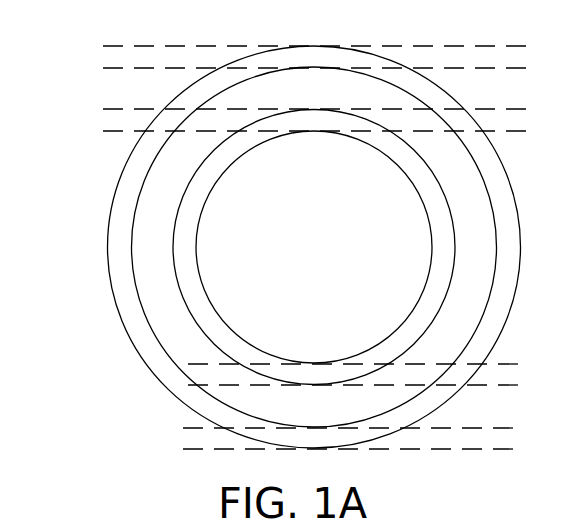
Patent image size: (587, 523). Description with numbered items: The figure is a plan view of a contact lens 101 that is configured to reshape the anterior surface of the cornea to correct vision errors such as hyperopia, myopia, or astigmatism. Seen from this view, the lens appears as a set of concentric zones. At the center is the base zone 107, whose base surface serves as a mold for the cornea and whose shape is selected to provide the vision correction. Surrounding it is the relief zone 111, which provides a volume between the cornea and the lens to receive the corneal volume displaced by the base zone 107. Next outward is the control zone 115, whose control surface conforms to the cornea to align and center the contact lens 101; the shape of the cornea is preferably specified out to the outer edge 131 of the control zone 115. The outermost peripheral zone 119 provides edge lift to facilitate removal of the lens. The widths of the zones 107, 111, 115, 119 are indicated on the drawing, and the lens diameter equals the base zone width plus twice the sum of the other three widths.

The contact lens 101 is at (90, 364).
The base zone 107 is at (205, 256).
The relief zone 111 is at (187, 290).
The control zone 115 is at (163, 331).
The peripheral zone 119 is at (150, 357).
The outer edge of the control zone 131 is at (418, 98).